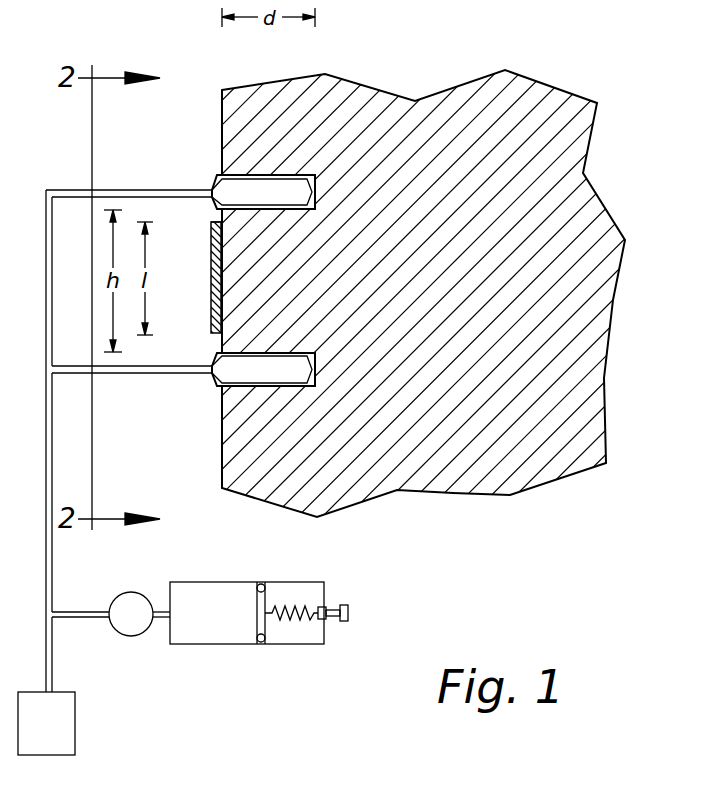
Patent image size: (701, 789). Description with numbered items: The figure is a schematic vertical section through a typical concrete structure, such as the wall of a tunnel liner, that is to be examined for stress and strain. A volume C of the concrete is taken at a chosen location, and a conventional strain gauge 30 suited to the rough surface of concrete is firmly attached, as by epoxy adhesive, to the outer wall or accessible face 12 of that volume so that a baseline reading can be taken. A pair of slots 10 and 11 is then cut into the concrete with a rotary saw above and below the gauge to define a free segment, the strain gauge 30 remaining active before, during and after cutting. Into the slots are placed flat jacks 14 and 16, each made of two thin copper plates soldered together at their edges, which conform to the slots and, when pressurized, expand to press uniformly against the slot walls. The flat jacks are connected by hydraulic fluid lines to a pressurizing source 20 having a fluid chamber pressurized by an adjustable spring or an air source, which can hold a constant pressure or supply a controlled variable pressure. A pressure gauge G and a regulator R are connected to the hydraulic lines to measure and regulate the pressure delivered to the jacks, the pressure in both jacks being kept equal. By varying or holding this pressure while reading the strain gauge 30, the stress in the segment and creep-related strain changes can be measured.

The slot 10 is at (222, 175).
The slot 11 is at (215, 387).
The accessible face 12 is at (212, 222).
The flat jack 14 is at (283, 192).
The flat jack 16 is at (248, 372).
The pressurizing source 20 is at (215, 645).
The strain gauge 30 is at (211, 297).
The volume C is at (587, 288).
The pressure gauge G is at (46, 723).
The regulator R is at (131, 614).